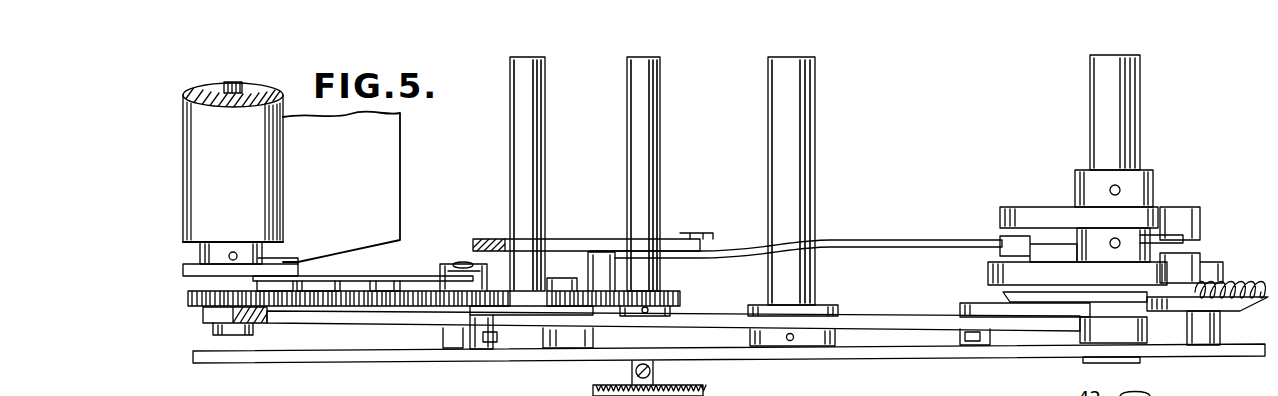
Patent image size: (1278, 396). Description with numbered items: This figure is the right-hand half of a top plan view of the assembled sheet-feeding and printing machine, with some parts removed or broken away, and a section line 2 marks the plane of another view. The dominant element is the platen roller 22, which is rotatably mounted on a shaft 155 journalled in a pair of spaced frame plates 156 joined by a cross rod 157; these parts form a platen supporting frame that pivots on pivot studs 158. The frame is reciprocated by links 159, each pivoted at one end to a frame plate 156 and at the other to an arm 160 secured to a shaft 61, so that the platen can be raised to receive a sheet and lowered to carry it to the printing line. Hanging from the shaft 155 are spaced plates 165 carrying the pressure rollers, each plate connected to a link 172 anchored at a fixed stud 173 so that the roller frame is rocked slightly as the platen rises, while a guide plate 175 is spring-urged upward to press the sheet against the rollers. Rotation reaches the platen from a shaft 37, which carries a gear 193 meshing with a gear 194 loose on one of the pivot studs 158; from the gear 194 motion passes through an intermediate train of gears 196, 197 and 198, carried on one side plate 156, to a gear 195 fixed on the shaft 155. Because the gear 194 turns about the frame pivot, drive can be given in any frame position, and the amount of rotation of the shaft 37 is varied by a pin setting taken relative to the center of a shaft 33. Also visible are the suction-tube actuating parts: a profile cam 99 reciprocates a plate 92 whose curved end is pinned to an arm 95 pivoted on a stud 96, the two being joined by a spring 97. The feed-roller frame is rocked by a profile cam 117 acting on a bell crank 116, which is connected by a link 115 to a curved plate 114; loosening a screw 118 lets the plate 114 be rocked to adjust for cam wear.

The section line 2 is at (265, 343).
The platen roller 22 is at (268, 174).
The shaft 33 is at (812, 138).
The shaft 37 is at (648, 133).
The shaft 61 is at (1126, 131).
The plate 92 is at (1030, 298).
The arm 95 is at (1207, 316).
The stud 96 is at (1208, 326).
The spring 97 is at (1232, 285).
The profile cam 99 is at (1088, 268).
The curved plate 114 is at (560, 244).
The link 115 is at (865, 244).
The bell crank 116 is at (992, 255).
The profile cam 117 is at (1135, 207).
The screw 118 is at (696, 231).
The shaft 155 is at (243, 86).
The frame plates 156 is at (335, 314).
The cross rod 157 is at (530, 157).
The pivot studs 158 is at (565, 340).
The links 159 is at (880, 318).
The arm 160 is at (1018, 311).
The plates 165 is at (248, 272).
The link 172 is at (392, 278).
The fixed stud 173 is at (452, 280).
The guide plate 175 is at (400, 186).
The gear 193 is at (683, 297).
The gear 194 is at (590, 290).
The gear 195 is at (188, 296).
The gear 196 is at (494, 288).
The gear 197 is at (382, 308).
The gear 198 is at (298, 306).